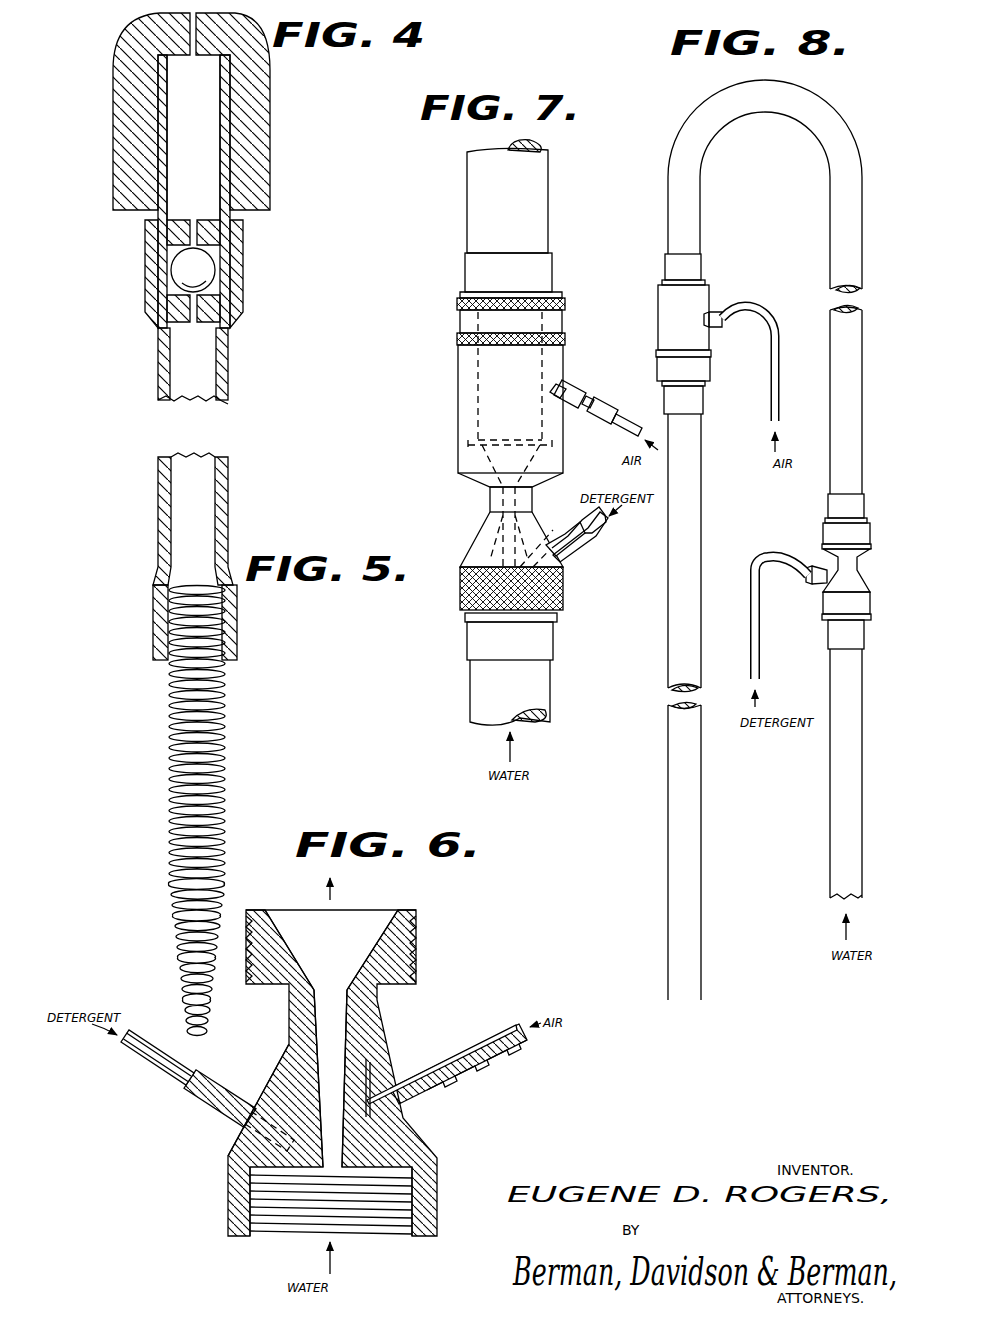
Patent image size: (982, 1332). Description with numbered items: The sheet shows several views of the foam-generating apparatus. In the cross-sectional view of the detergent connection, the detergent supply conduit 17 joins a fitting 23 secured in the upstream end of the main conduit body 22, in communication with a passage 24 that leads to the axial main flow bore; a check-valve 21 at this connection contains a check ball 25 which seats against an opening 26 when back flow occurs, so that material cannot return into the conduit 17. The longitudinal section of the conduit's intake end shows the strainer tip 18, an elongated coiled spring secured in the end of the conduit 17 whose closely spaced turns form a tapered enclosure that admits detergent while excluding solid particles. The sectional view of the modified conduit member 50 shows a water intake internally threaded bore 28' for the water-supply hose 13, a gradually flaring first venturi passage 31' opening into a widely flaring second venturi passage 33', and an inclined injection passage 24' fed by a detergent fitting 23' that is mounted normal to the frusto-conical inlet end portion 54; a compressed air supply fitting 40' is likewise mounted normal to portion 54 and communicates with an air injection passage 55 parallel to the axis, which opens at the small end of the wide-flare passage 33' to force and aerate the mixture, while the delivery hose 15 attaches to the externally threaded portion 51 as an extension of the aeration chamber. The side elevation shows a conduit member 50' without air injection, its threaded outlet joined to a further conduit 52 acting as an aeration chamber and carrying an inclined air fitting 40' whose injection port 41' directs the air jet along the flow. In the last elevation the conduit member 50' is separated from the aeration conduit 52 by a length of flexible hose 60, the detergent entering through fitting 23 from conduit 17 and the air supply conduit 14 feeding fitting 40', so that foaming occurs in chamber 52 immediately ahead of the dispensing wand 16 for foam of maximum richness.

In FIG. 7, the water supply conduit 13 is at (545, 690).
In FIG. 8, the water supply conduit 13 is at (860, 826).
In FIG. 7, the air supply conduit 14 is at (628, 424).
In FIG. 8, the air supply conduit 14 is at (778, 378).
In FIG. 7, the flexible conduit 15 is at (540, 220).
In FIG. 8, the tubular wand 16 is at (694, 528).
In FIG. 4, the flexible supply conduit 17 is at (223, 363).
In FIG. 5, the flexible supply conduit 17 is at (225, 498).
In FIG. 6, the flexible supply conduit 17 is at (131, 1059).
In FIG. 7, the flexible supply conduit 17 is at (600, 527).
In FIG. 8, the flexible supply conduit 17 is at (758, 627).
In FIG. 5, the strainer tip 18 is at (214, 795).
In FIG. 4, the check-valve 21 is at (240, 238).
In FIG. 4, the main conduit body 22 is at (258, 137).
In FIG. 4, the fitting 23 is at (253, 191).
In FIG. 7, the fitting 23 is at (563, 528).
In FIG. 8, the fitting 23 is at (802, 551).
In FIG. 4, the passage 24 is at (193, 132).
In FIG. 4, the check ball 25 is at (207, 277).
In FIG. 4, the opening 26 is at (223, 310).
In FIG. 6, the detergent fitting 23' is at (233, 1132).
In FIG. 6, the injection passage 24' is at (322, 1211).
In FIG. 6, the internally threaded bore 28' is at (342, 1226).
In FIG. 6, the first venturi passage 31' is at (393, 1078).
In FIG. 7, the first venturi passage 31' is at (501, 527).
In FIG. 6, the second venturi passage 33' is at (371, 932).
In FIG. 7, the second venturi passage 33' is at (511, 439).
In FIG. 6, the compressed air supply fitting 40' is at (460, 1037).
In FIG. 7, the compressed air supply fitting 40' is at (587, 384).
In FIG. 8, the compressed air supply fitting 40' is at (730, 288).
In FIG. 7, the injection port 41' is at (582, 351).
In FIG. 6, the conduit member 50 is at (368, 1073).
In FIG. 7, the conduit member 50' is at (491, 573).
In FIG. 8, the conduit member 50' is at (868, 571).
In FIG. 6, the externally threaded portion 51 is at (399, 958).
In FIG. 7, the conduit 52 is at (467, 392).
In FIG. 8, the conduit 52 is at (658, 303).
In FIG. 6, the frusto-conical inlet end portion 54 is at (273, 1066).
In FIG. 6, the air injection passage 55 is at (365, 1078).
In FIG. 8, the flexible hose 60 is at (822, 128).